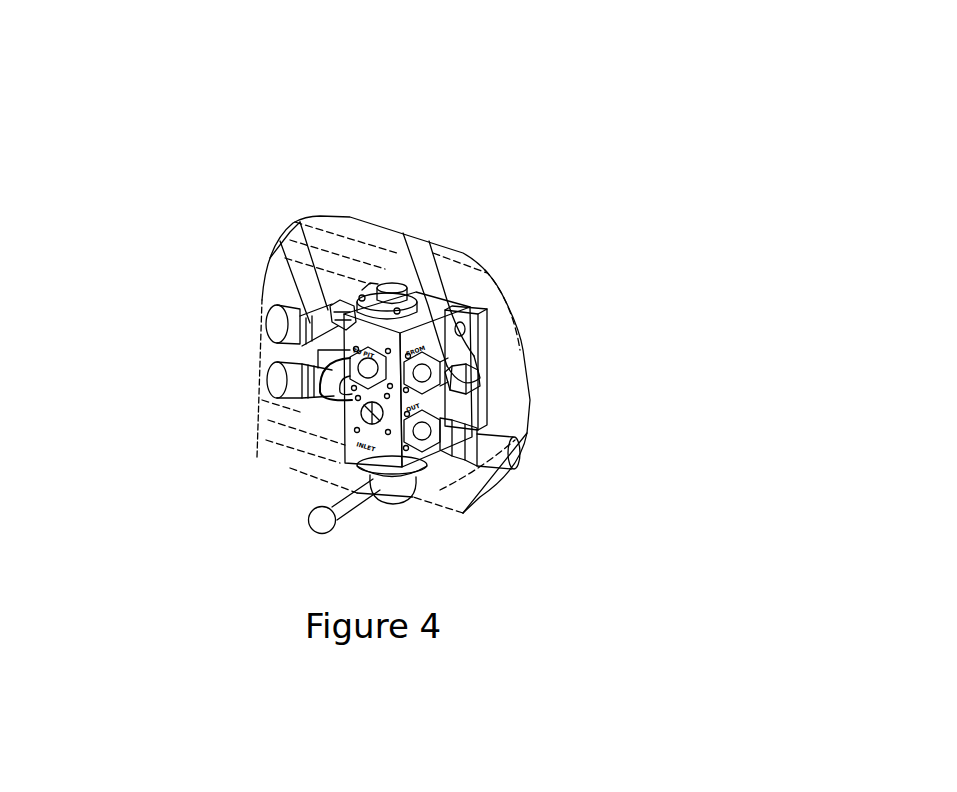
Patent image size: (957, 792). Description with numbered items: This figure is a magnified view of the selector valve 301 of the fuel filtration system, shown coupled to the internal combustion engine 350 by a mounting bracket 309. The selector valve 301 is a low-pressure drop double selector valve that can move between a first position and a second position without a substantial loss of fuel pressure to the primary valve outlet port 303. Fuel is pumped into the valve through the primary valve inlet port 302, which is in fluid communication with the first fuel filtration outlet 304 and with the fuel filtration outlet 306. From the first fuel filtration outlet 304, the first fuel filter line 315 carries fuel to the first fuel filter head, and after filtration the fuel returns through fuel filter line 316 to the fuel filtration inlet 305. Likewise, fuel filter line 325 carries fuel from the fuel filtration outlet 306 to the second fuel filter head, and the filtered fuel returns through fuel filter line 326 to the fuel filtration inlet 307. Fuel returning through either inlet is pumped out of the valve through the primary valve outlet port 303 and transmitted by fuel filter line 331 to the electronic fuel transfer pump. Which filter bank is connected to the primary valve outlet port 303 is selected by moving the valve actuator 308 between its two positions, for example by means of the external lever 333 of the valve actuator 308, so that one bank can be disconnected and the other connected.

The selector valve 301 is at (361, 300).
The primary valve inlet port 302 is at (370, 413).
The primary valve outlet port 303 is at (360, 382).
The first fuel filtration outlet 304 is at (473, 425).
The fuel filtration inlet 305 is at (450, 373).
The fuel filtration outlet 306 is at (340, 363).
The fuel filtration inlet 307 is at (348, 300).
The valve actuator 308 is at (393, 488).
The mounting bracket 309 is at (472, 342).
The first fuel filter line 315 is at (496, 453).
The fuel filter line 316 is at (428, 332).
The fuel filter line 325 is at (273, 383).
The fuel filter line 326 is at (272, 333).
The fuel filter line 331 is at (283, 278).
The external lever 333 is at (323, 530).
The internal combustion engine 350 is at (448, 275).